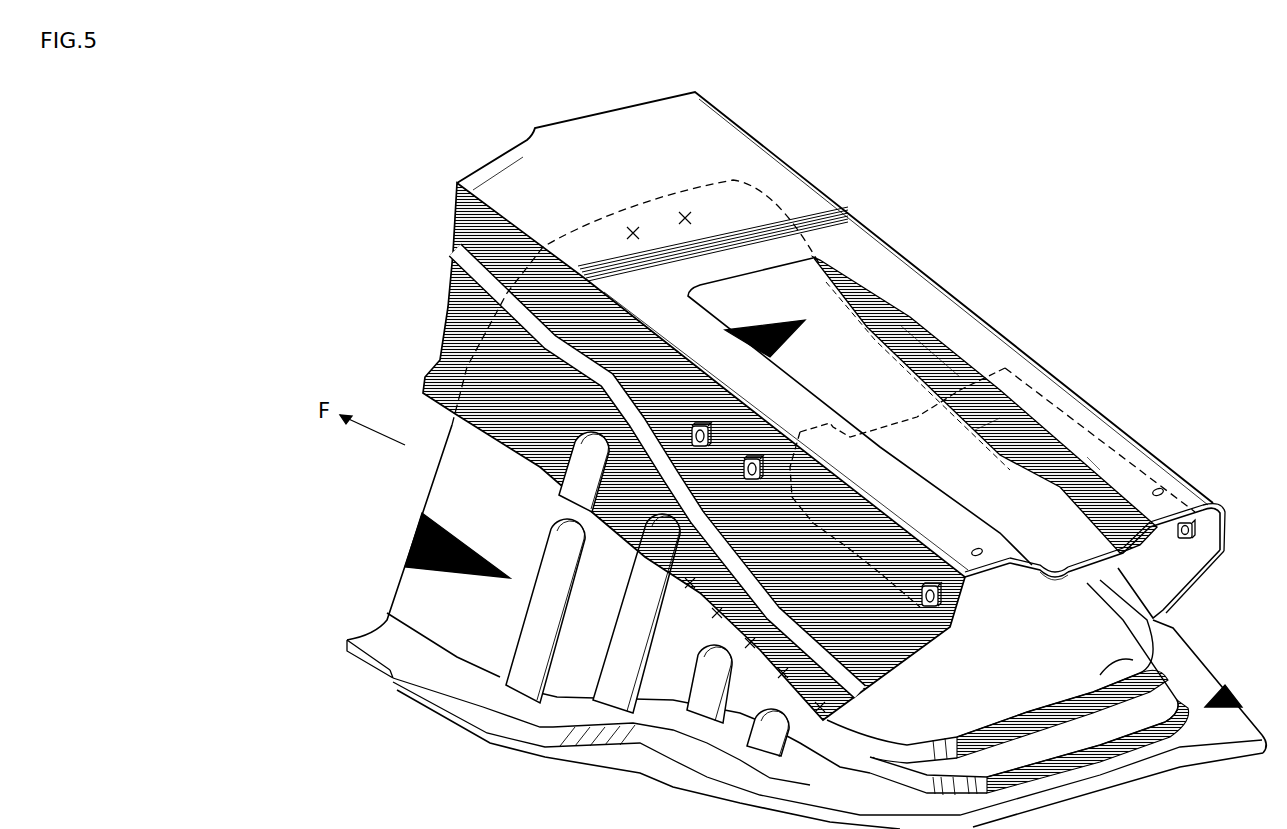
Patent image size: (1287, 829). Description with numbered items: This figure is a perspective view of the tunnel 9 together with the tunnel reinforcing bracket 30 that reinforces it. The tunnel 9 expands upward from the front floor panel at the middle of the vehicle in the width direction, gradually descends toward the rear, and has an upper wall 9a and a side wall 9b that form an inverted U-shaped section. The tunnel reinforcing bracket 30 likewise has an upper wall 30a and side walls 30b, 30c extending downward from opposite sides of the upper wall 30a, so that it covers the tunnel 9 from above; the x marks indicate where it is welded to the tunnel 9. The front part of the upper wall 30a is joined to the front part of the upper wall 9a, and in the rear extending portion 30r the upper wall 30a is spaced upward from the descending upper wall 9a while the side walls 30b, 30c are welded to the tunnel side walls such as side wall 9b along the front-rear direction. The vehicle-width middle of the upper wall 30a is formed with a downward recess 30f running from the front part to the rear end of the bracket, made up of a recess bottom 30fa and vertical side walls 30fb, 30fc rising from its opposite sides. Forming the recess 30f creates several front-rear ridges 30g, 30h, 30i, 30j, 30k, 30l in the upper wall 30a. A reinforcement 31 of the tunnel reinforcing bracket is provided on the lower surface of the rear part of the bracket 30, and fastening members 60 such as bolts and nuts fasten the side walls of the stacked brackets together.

The tunnel 9 is at (399, 578).
The upper wall 9a is at (1177, 677).
The side wall 9b is at (440, 495).
The tunnel reinforcing bracket 30 is at (951, 294).
The upper wall 30a is at (725, 148).
The side wall 30b is at (808, 564).
The side wall 30c is at (1187, 588).
The recess 30f is at (1018, 421).
The recess bottom 30fa is at (912, 437).
The vertical side wall 30fb is at (1053, 563).
The vertical side wall 30fc is at (938, 371).
The ridge 30g is at (900, 528).
The ridge 30h is at (935, 485).
The ridge 30i is at (1076, 580).
The ridge 30j is at (975, 430).
The ridge 30k is at (1087, 457).
The ridge 30l is at (1170, 463).
The rear extending portion 30r is at (1200, 488).
The reinforcement of the tunnel reinforcing bracket 31 is at (1100, 408).
The fastening members 60 is at (708, 428).